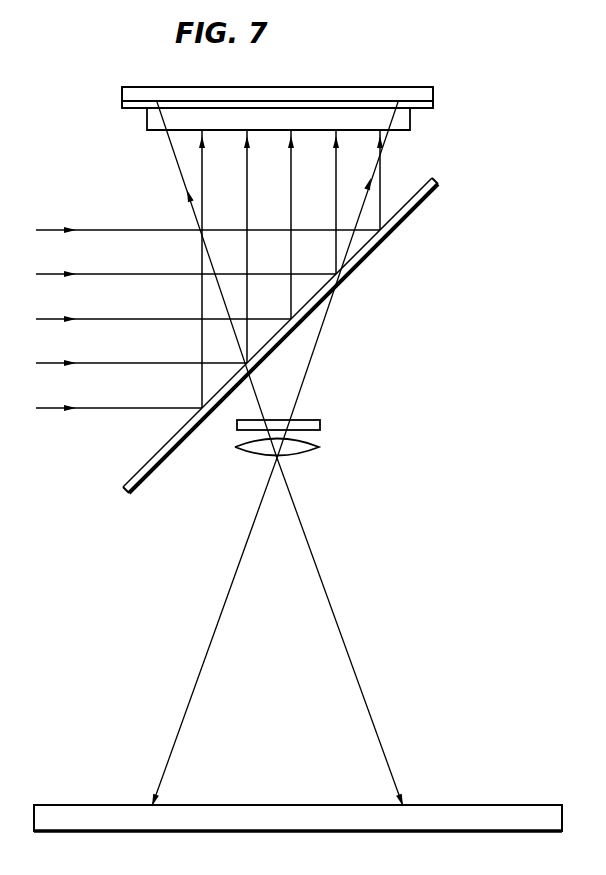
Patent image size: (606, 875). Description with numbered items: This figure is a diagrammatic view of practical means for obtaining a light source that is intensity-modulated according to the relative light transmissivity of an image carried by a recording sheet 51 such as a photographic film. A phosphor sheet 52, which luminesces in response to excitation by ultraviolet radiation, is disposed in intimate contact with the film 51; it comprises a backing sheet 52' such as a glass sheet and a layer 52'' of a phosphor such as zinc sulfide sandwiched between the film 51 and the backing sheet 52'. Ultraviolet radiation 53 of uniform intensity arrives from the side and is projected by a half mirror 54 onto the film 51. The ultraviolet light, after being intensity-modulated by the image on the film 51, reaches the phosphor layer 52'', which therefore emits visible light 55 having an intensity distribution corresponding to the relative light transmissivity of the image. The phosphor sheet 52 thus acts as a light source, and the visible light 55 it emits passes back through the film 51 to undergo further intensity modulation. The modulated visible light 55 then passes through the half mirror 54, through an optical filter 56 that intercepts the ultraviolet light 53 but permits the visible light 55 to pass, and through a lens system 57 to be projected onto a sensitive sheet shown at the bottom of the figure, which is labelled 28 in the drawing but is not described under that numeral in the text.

The recording surface / plate 28 is at (505, 805).
The recording sheet 51 is at (405, 119).
The phosphor sheet 52 is at (277, 76).
The backing sheet 52' is at (302, 80).
The phosphor layer 52'' is at (312, 100).
The ultraviolet radiation 53 is at (62, 411).
The half mirror 54 is at (428, 192).
The visible light 55 is at (197, 668).
The optical filter 56 is at (320, 425).
The lens system 57 is at (304, 453).